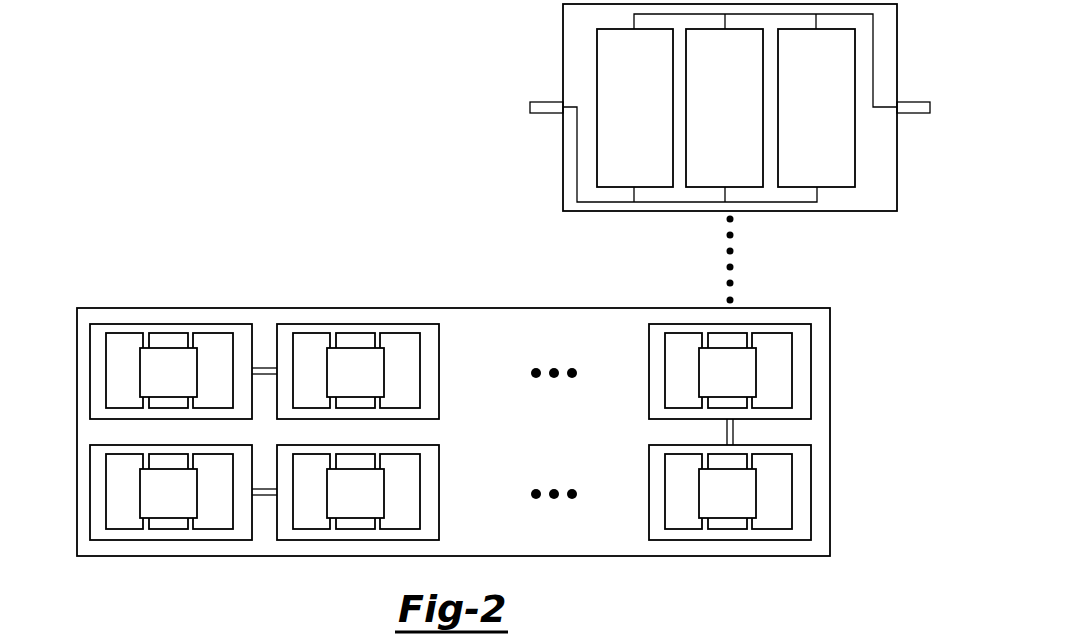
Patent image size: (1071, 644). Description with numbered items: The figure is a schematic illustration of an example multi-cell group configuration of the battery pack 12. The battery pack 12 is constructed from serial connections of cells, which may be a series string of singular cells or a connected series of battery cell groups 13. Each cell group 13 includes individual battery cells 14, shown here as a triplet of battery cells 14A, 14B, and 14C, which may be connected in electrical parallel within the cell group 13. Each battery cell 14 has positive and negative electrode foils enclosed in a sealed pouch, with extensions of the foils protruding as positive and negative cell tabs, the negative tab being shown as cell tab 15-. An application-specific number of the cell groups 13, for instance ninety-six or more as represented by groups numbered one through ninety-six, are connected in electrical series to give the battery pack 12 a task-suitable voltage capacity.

The battery pack 12 is at (830, 431).
The battery cell group 13 is at (105, 370).
The battery cell 14 is at (878, 195).
The first battery cell 14A is at (597, 48).
The second battery cell 14B is at (702, 187).
The third battery cell 14C is at (853, 159).
The negative cell tab 15- is at (545, 113).